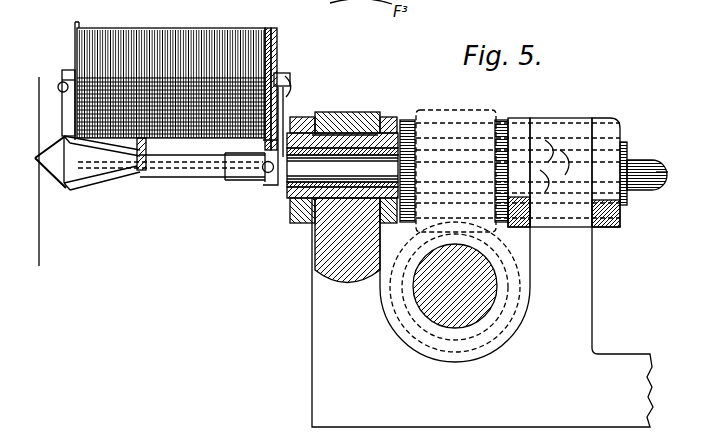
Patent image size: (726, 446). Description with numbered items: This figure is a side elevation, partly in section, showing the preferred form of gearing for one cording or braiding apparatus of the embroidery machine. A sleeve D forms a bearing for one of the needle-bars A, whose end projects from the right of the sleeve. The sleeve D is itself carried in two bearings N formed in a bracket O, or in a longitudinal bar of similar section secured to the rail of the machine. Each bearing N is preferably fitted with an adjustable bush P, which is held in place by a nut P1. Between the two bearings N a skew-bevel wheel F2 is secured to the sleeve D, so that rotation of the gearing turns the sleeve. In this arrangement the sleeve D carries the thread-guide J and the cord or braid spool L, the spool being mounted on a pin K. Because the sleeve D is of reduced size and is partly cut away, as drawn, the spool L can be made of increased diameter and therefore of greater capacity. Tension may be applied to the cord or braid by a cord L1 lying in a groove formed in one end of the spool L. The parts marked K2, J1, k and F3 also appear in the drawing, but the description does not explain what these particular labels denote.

The cord or braid spool L is at (182, 29).
The tension cord L1 is at (271, 28).
The pin K is at (293, 88).
The clamp knob K2 is at (285, 73).
The cord or braid guide J is at (62, 121).
The funnel guide J1 is at (65, 188).
The support stem k is at (38, 233).
The sleeve D is at (290, 190).
The bearing N is at (347, 133).
The adjustable bush P is at (355, 135).
The nut P1 is at (302, 117).
The skew-bevel wheel F2 is at (468, 112).
The bearing housing F3 is at (488, 346).
The bracket O is at (471, 312).
The needle-bar A is at (669, 179).